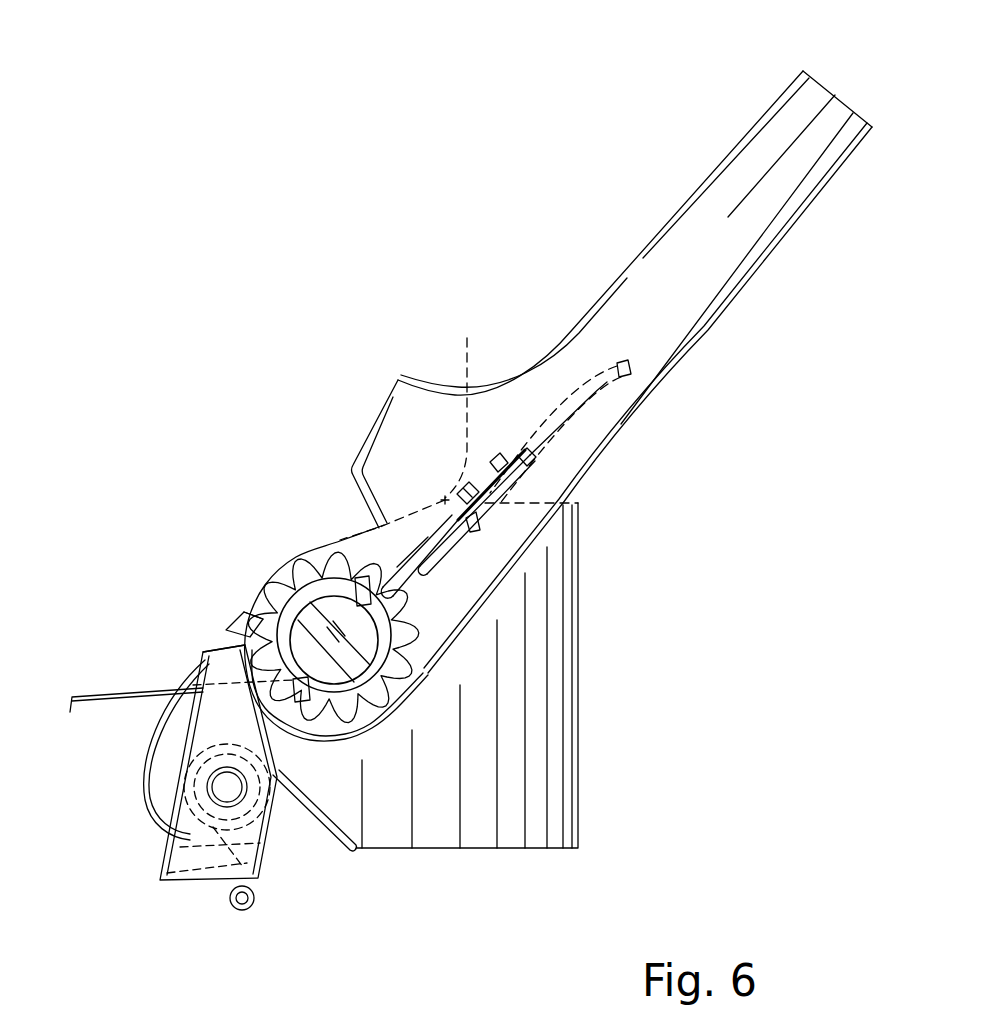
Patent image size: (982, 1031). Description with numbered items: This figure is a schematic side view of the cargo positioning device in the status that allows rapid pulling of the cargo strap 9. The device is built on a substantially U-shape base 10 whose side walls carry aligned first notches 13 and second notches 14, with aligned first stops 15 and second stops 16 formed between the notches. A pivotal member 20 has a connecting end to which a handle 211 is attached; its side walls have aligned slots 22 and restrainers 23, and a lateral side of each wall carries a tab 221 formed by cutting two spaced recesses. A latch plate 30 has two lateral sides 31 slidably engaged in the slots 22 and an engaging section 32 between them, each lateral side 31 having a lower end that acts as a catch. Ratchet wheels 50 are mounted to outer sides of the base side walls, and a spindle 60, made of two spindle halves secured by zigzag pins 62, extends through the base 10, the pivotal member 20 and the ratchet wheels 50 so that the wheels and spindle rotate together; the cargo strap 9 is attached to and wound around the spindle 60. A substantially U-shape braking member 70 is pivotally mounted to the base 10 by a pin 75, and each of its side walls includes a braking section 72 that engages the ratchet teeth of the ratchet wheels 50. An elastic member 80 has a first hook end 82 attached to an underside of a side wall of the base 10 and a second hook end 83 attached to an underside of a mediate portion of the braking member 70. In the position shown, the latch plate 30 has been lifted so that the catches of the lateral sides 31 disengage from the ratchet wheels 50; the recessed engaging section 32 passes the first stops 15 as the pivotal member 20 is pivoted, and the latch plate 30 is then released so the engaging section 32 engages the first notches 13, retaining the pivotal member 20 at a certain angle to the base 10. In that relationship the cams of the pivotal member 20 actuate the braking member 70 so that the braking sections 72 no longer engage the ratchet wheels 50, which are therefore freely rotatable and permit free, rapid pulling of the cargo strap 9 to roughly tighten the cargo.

The cargo strap 9 is at (88, 690).
The base 10 is at (555, 775).
The first notches 13 is at (493, 495).
The second notches 14 is at (247, 636).
The first stops 15 is at (411, 423).
The second stops 16 is at (245, 626).
The pivotal member 20 is at (757, 237).
The slots 22 is at (400, 590).
The restrainers 23 is at (392, 420).
The latch plate 30 is at (640, 372).
The lateral sides 31 is at (427, 568).
The engaging section 32 is at (472, 520).
The ratchet wheels 50 is at (297, 566).
The spindle 60 is at (362, 630).
The zigzag pins 62 is at (362, 577).
The braking member 70 is at (170, 855).
The braking section 72 is at (200, 653).
The pin 75 is at (225, 783).
The elastic member 80 is at (175, 788).
The first hook end 82 is at (355, 858).
The second hook end 83 is at (243, 912).
The handle 211 is at (833, 123).
The tab 221 is at (487, 487).